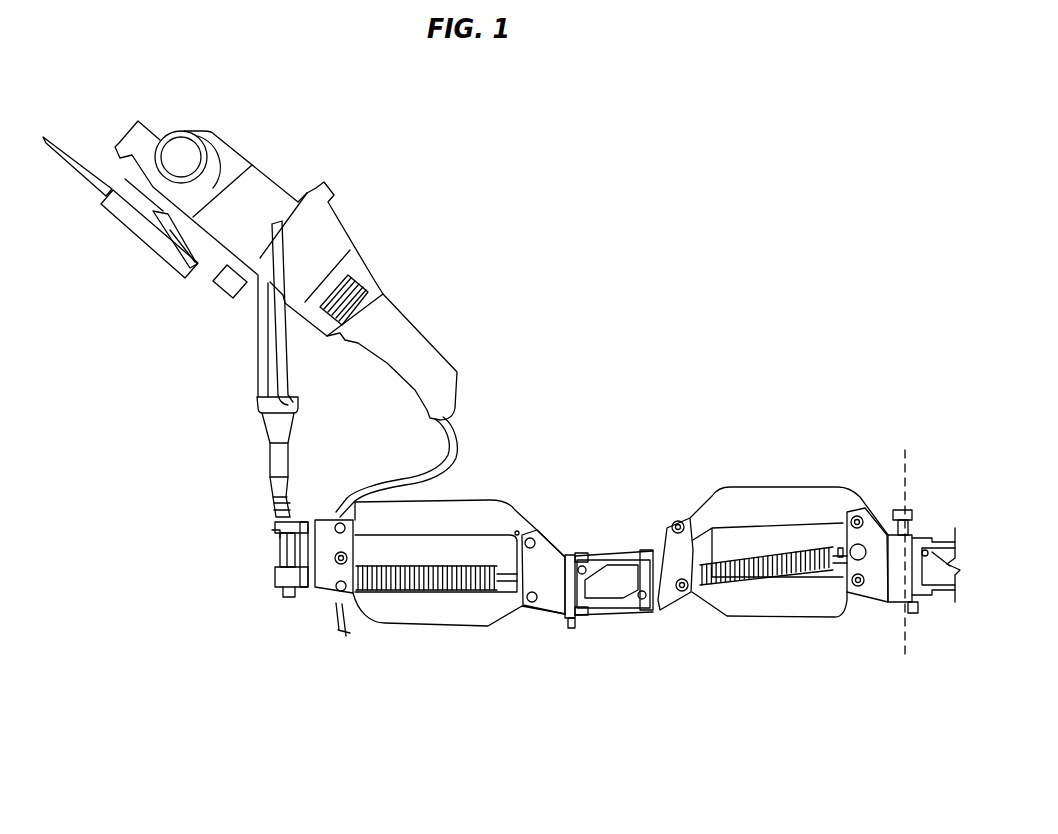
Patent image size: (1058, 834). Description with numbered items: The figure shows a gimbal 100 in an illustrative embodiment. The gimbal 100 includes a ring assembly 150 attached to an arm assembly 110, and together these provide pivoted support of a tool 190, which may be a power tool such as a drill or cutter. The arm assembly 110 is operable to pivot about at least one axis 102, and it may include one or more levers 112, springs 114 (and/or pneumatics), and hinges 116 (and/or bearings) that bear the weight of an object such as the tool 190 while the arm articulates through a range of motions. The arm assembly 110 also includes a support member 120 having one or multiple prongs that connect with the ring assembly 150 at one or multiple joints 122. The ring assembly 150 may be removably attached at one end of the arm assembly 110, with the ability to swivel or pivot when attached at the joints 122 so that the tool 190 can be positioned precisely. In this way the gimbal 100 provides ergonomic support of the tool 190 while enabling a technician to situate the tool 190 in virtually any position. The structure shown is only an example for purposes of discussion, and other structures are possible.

The gimbal 100 is at (241, 727).
The axis 102 is at (905, 452).
The arm assembly 110 is at (640, 437).
The lever 112 is at (478, 507).
The spring 114 is at (442, 578).
The hinge 116 is at (274, 560).
The support member 120 is at (258, 348).
The joint 122 is at (283, 347).
The ring assembly 150 is at (323, 185).
The tool 190 is at (407, 340).